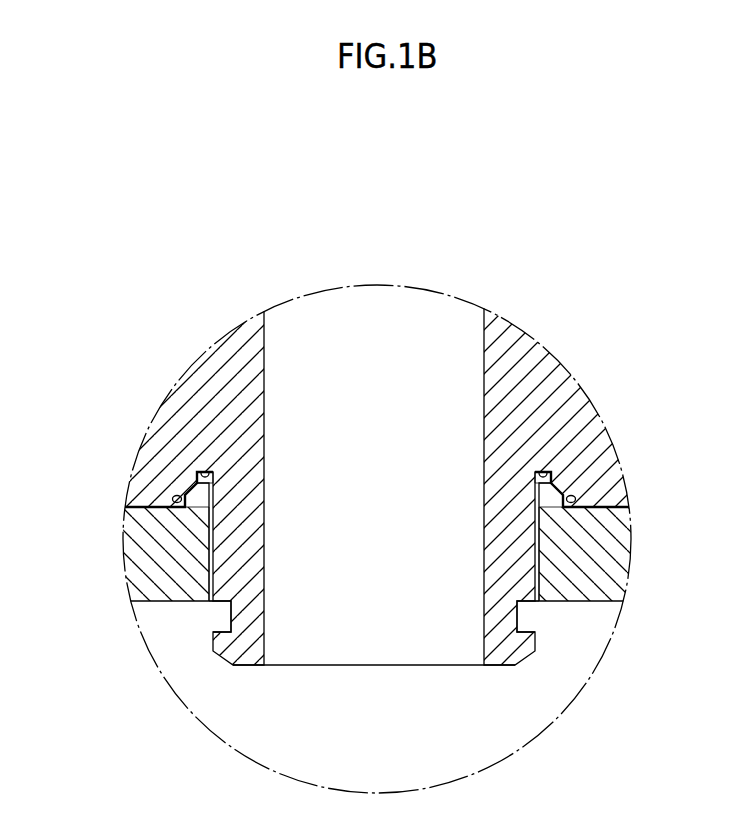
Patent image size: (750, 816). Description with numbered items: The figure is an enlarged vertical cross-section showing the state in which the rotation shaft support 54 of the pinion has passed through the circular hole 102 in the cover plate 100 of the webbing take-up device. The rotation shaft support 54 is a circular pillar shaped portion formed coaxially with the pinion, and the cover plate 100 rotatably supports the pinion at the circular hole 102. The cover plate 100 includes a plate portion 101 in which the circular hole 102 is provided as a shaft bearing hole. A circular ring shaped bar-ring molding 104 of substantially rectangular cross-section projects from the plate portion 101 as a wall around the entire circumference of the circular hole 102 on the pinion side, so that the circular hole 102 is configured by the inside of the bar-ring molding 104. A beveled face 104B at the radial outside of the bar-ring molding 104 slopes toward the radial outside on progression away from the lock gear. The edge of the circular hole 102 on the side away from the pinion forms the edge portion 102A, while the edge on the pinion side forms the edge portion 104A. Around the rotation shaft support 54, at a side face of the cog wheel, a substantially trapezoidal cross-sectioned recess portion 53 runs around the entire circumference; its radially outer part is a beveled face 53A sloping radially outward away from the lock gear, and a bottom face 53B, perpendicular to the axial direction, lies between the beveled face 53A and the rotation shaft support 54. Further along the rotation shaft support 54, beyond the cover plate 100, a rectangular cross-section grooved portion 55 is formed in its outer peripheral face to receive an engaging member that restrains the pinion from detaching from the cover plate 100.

The recess portion 53 is at (198, 478).
The beveled face 53A is at (185, 494).
The bottom face 53B is at (212, 475).
The rotation shaft support 54 is at (247, 547).
The grooved portion 55 is at (213, 601).
The cover plate 100 is at (130, 621).
The plate portion 101 is at (150, 532).
The circular hole 102 is at (207, 576).
The edge portion 102A is at (222, 618).
The bar-ring molding 104 is at (200, 488).
The edge portion 104A is at (214, 472).
The beveled face 104B is at (173, 496).